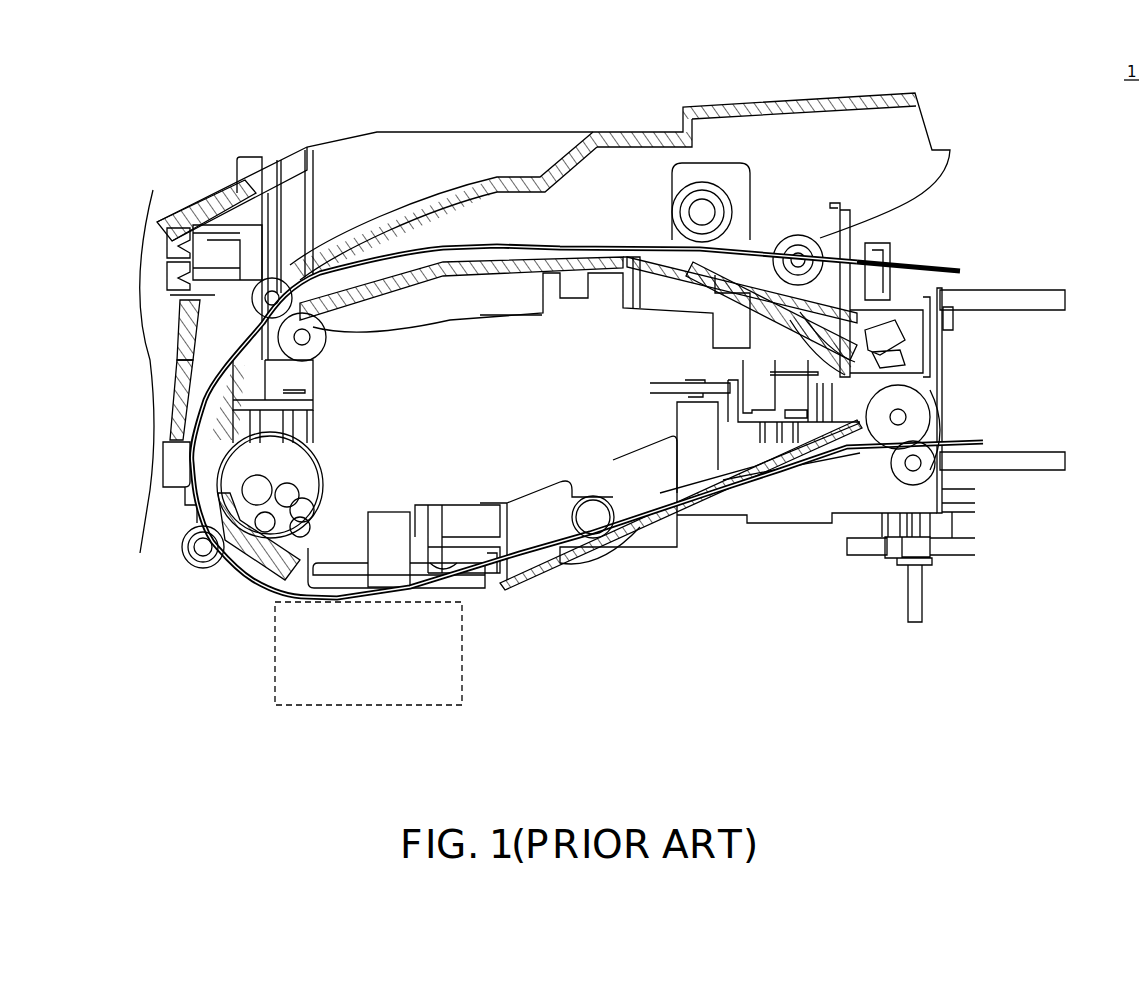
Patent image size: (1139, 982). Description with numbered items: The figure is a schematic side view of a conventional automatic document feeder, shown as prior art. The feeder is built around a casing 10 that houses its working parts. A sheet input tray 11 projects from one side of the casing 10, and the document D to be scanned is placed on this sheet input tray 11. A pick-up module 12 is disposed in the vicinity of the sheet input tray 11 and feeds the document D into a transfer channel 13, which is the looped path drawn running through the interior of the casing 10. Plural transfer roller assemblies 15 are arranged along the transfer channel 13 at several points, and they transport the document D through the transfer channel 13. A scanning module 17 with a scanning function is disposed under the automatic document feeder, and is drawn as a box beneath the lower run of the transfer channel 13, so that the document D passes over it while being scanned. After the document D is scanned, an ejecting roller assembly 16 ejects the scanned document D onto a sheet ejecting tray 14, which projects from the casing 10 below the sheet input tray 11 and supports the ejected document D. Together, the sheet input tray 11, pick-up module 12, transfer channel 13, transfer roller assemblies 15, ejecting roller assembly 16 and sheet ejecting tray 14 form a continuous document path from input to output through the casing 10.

The casing 10 is at (622, 168).
The sheet input tray 11 is at (1010, 290).
The pick-up module 12 is at (807, 250).
The transfer channel 13 is at (427, 247).
The sheet ejecting tray 14 is at (1010, 452).
The transfer roller assemblies 15 is at (270, 293).
The ejecting roller assembly 16 is at (922, 452).
The scanning module 17 is at (448, 655).
The document D is at (913, 260).